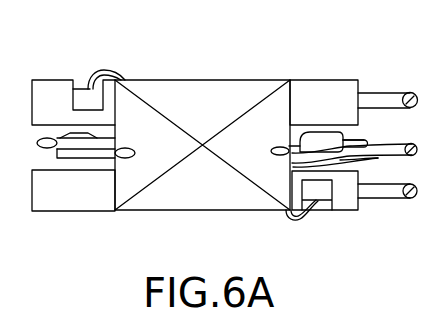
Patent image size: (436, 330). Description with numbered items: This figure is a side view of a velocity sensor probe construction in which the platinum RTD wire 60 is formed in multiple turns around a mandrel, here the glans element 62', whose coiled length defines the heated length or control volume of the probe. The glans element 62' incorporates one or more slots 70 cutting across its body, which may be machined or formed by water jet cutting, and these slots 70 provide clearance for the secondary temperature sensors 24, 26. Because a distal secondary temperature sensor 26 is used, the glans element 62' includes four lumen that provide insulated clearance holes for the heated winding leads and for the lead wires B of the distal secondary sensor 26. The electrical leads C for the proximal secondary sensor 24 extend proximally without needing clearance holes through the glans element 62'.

The platinum RTD wire 60 is at (288, 63).
The glans element 62' is at (69, 73).
The slots 70 is at (0, 145).
The distal secondary temperature sensor 26 is at (88, 159).
The proximal secondary temperature sensor 24 is at (298, 157).
The lead wires B is at (378, 158).
The electrical leads C is at (370, 140).